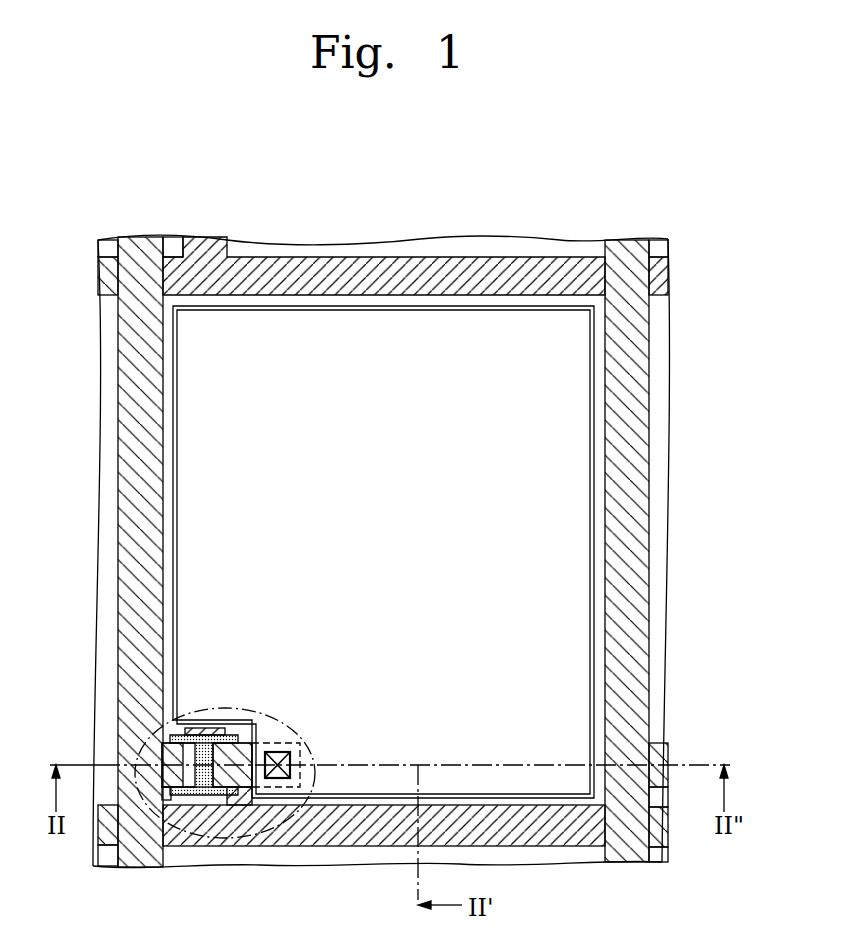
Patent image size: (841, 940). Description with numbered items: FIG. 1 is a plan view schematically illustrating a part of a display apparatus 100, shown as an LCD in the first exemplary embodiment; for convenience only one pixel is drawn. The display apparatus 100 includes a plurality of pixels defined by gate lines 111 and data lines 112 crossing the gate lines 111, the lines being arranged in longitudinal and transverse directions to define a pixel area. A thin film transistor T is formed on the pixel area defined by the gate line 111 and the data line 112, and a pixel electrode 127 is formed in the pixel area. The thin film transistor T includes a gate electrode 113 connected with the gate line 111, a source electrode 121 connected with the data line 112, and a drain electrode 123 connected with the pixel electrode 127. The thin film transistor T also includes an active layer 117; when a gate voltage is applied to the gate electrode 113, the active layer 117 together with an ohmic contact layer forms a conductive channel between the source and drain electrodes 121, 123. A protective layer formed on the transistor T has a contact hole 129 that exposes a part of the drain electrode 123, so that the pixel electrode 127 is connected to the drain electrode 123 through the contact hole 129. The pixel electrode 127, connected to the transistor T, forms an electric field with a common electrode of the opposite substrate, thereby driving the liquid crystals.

The display apparatus 100 is at (141, 220).
The gate line 111 is at (540, 830).
The data line 112 is at (130, 469).
The gate electrode 113 is at (204, 796).
The active layer 117 is at (236, 792).
The source electrode 121 is at (182, 796).
The drain electrode 123 is at (218, 796).
The pixel electrode 127 is at (190, 588).
The contact hole 129 is at (278, 751).
The thin film transistor T is at (213, 706).